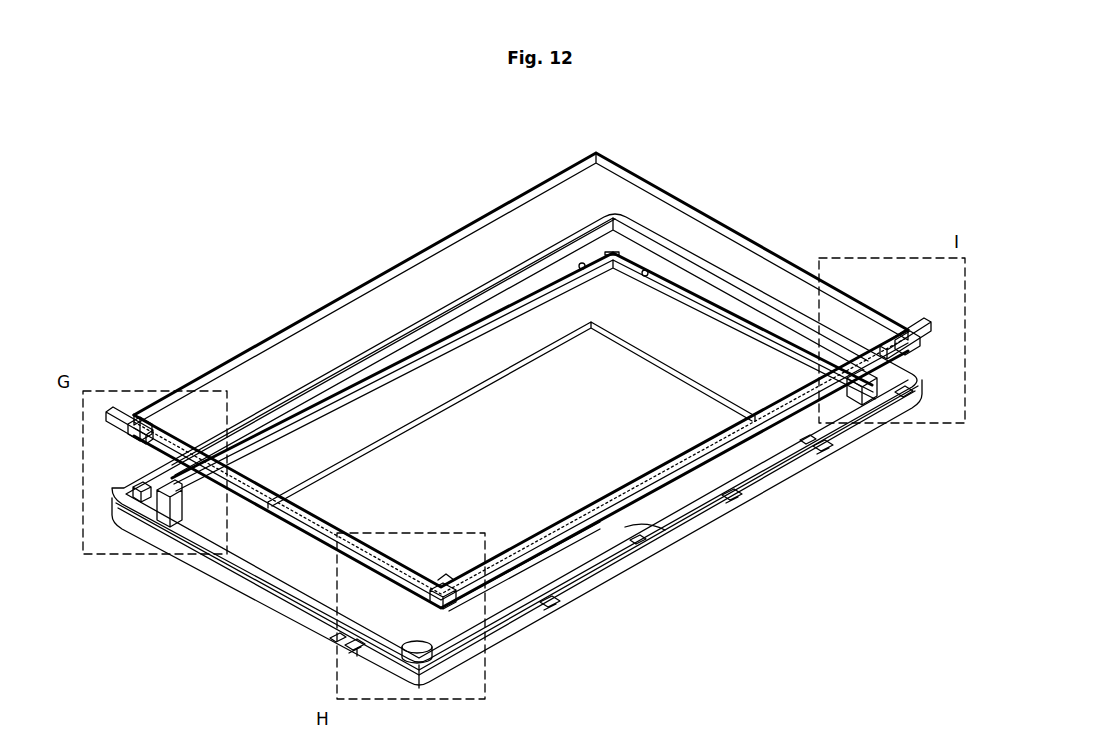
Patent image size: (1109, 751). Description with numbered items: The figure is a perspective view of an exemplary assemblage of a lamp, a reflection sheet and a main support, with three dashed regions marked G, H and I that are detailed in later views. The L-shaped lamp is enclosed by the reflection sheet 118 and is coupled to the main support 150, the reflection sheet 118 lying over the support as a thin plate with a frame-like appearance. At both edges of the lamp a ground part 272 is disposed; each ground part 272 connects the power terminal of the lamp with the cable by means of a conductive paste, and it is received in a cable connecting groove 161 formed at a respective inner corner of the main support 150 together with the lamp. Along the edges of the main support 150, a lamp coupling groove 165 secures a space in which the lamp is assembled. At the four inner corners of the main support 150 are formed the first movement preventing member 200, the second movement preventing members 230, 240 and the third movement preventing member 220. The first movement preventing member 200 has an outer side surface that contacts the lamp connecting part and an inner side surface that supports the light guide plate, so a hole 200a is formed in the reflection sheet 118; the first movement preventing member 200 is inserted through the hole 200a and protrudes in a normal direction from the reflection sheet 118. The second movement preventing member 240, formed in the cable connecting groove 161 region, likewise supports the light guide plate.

The reflection sheet 118 is at (596, 153).
The third movement preventing member 220 is at (614, 253).
The ground part 272 is at (125, 410).
The second movement preventing member 240 is at (872, 405).
The main support 150 is at (815, 460).
The lamp coupling groove 165 is at (665, 530).
The cable connecting groove 161 is at (138, 503).
The second movement preventing member 230 is at (174, 525).
The first movement preventing member 200 is at (432, 652).
The hole 200a is at (450, 580).